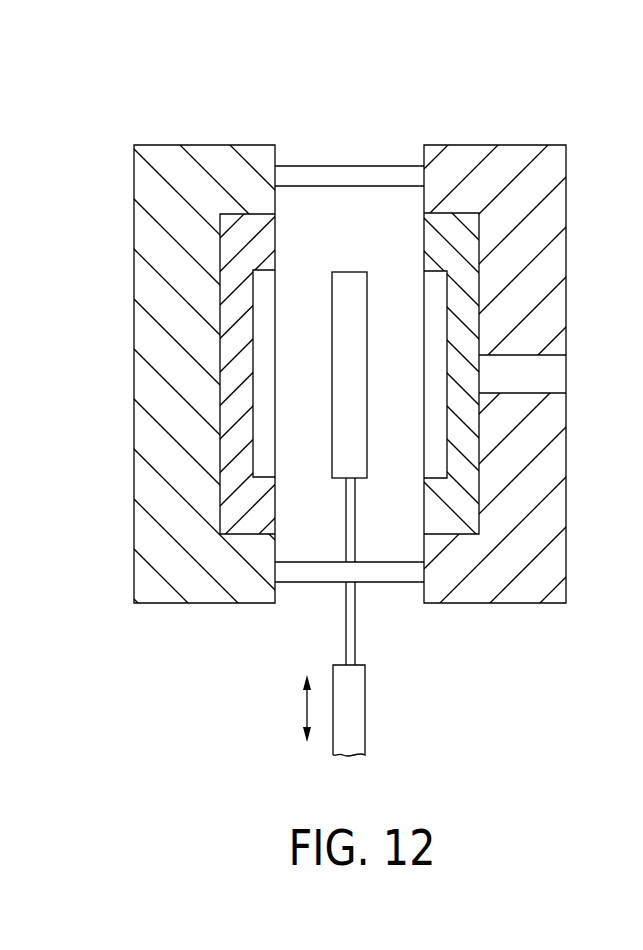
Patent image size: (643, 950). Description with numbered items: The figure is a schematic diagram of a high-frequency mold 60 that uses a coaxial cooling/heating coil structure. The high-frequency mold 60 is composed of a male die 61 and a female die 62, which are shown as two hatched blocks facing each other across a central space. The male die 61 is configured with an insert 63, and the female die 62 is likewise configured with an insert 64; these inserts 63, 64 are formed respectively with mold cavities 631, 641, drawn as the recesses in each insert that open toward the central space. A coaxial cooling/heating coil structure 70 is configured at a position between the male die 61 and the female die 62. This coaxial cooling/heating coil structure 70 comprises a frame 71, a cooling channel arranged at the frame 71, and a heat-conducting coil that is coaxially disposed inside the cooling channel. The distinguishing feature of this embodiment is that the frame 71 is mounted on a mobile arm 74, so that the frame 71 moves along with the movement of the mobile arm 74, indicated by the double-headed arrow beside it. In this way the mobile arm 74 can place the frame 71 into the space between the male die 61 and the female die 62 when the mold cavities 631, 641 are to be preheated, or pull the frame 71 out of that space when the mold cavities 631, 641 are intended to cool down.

The high-frequency mold 60 is at (369, 75).
The male die 61 is at (207, 152).
The female die 62 is at (477, 152).
The insert 63 is at (268, 503).
The mold cavity 631 is at (268, 402).
The insert 64 is at (430, 503).
The mold cavity 641 is at (430, 397).
The coaxial cooling/heating coil structure 70 is at (348, 262).
The frame 71 is at (337, 304).
The mobile arm 74 is at (362, 705).